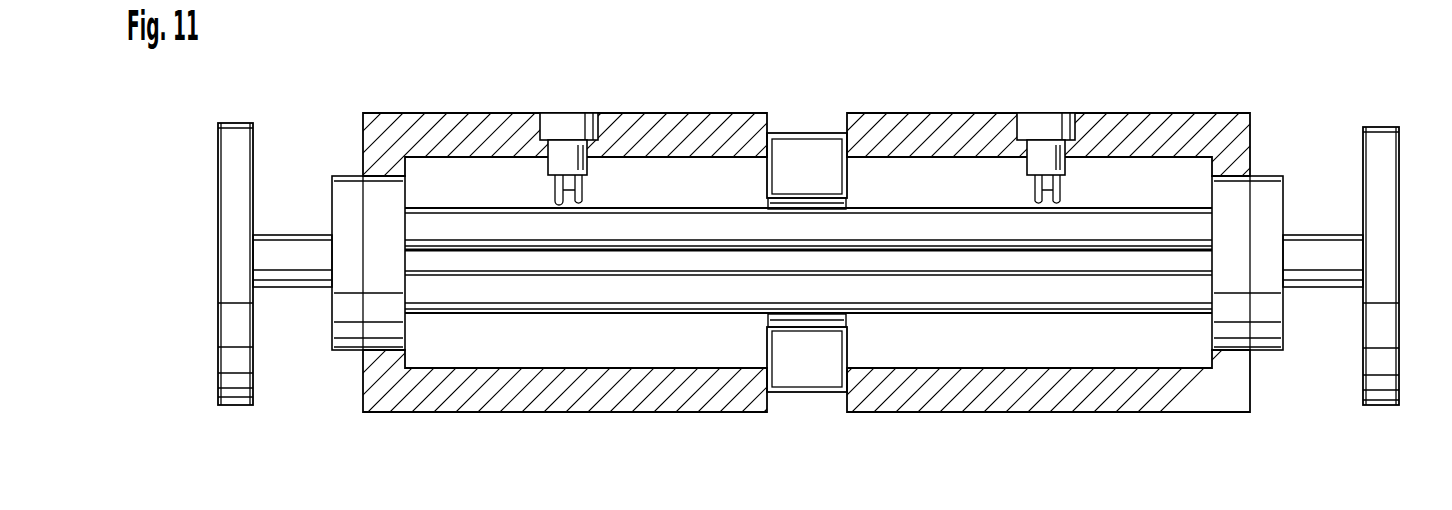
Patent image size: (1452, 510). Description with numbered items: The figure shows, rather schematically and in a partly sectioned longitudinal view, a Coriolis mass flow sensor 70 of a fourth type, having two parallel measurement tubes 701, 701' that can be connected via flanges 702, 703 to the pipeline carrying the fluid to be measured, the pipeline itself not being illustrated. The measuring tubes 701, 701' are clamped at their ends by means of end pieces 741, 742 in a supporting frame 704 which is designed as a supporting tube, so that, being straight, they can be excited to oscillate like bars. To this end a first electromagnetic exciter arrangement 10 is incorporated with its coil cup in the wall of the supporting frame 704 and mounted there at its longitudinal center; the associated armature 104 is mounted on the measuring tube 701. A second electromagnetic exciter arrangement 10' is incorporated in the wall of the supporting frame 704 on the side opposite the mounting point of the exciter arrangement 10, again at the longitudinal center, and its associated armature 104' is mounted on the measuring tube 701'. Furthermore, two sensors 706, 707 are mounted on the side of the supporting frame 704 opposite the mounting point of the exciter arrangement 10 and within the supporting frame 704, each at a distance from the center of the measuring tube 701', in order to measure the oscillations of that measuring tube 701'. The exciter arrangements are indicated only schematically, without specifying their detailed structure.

The mass flow sensor 70 is at (410, 97).
The first electromagnetic exciter arrangement 10 is at (819, 129).
The second electromagnetic exciter arrangement 10' is at (817, 390).
The armature 104 is at (850, 134).
The armature 104' is at (865, 384).
The measurement tube 701 is at (808, 167).
The measurement tube 701' is at (808, 378).
The flange 702 is at (243, 126).
The flange 703 is at (1382, 138).
The supporting frame 704 is at (698, 122).
The sensor 706 is at (582, 127).
The sensor 707 is at (1058, 123).
The end piece 741 is at (343, 183).
The end piece 742 is at (1273, 188).